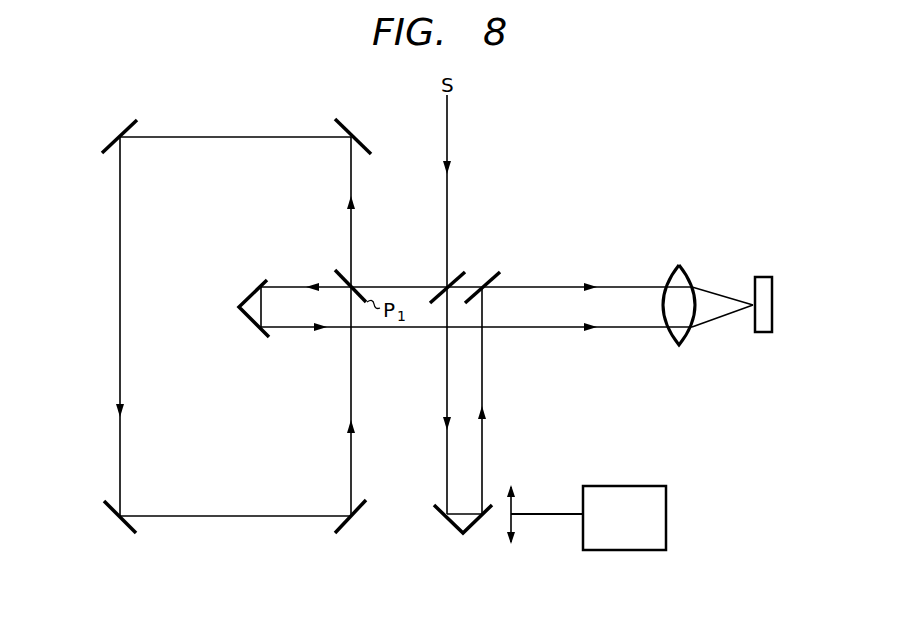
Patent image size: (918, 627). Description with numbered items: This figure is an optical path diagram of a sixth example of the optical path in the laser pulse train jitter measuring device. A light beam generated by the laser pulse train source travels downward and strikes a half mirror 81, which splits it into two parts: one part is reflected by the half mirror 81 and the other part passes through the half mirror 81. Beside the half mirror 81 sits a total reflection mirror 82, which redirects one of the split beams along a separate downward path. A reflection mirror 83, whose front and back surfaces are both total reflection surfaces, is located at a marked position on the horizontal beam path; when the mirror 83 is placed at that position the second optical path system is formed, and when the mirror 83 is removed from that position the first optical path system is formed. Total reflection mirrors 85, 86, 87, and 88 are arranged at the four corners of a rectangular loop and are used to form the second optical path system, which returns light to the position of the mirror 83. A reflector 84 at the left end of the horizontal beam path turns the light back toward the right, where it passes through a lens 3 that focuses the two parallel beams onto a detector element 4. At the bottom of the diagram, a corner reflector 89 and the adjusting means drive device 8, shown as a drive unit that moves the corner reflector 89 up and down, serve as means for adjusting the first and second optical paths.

The lens 3 is at (684, 268).
The photodetector 4 is at (762, 276).
The adjusting means drive device 8 is at (652, 485).
The half mirror 81 is at (462, 268).
The total reflection mirror 82 is at (492, 273).
The reflection mirror 83 is at (338, 270).
The corner reflector 84 is at (254, 327).
The total reflection mirror 85 is at (358, 133).
The total reflection mirror 86 is at (110, 142).
The total reflection mirror 87 is at (111, 520).
The total reflection mirror 88 is at (357, 520).
The corner reflector 89 is at (438, 509).